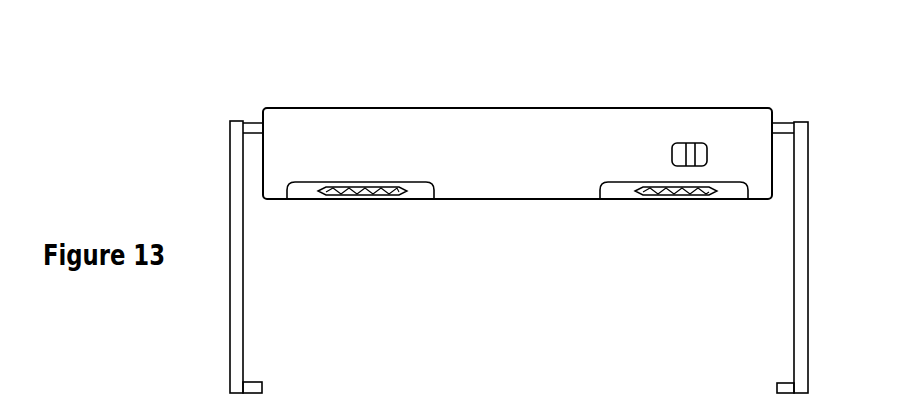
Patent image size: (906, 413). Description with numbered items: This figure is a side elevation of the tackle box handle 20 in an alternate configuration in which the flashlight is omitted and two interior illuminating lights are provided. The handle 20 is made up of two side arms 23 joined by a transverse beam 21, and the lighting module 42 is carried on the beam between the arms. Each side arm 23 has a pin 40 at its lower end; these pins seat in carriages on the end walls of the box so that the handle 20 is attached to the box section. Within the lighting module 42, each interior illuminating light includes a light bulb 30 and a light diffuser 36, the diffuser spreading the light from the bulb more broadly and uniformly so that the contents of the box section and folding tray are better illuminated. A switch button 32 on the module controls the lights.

The handle 20 is at (795, 325).
The transverse beam 21 is at (782, 125).
The side arms 23 is at (245, 337).
The light bulb 30 is at (400, 197).
The switch button 32 is at (688, 143).
The light diffuser 36 is at (310, 197).
The pins 40 is at (260, 380).
The lighting module 42 is at (270, 107).